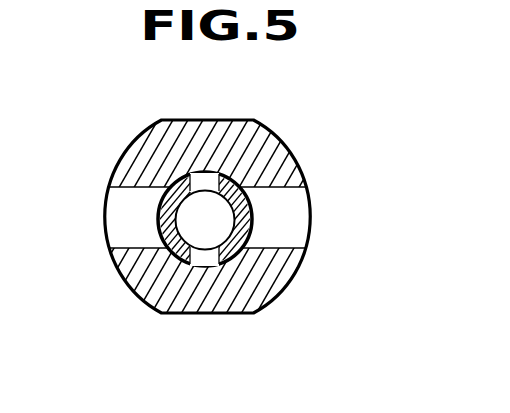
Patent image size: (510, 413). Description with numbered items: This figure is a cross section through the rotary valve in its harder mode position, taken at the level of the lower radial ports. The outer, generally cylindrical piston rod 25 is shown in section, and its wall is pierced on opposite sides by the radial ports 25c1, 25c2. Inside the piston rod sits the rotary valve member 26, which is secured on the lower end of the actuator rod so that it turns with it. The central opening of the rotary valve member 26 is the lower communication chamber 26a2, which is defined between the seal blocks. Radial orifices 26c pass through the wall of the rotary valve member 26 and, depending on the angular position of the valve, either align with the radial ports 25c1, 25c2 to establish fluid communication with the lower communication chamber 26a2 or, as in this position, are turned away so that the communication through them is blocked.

The piston rod 25 is at (299, 173).
The radial port 25c1 is at (122, 218).
The radial port 25c2 is at (297, 226).
The rotary valve member 26 is at (242, 172).
The lower communication chamber 26a2 is at (187, 207).
The radial orifice 26c is at (214, 183).